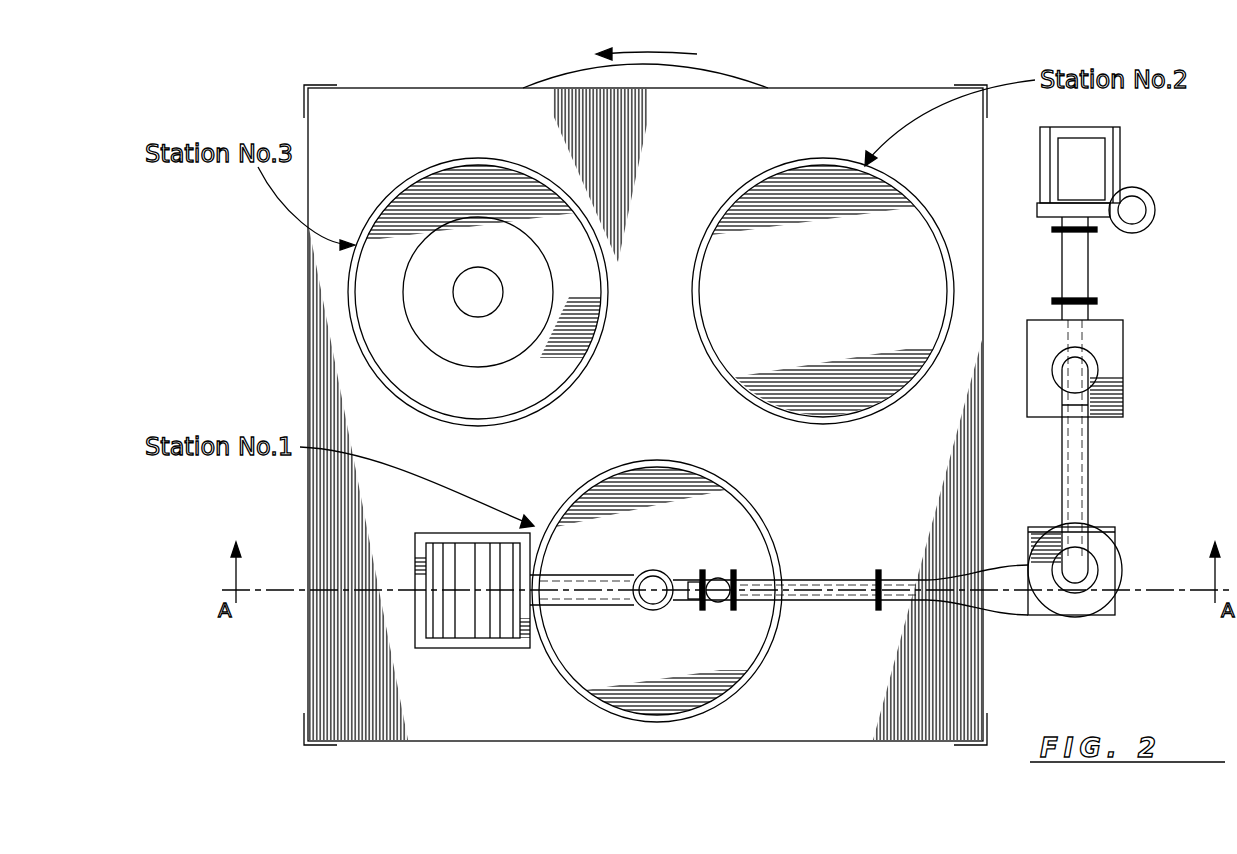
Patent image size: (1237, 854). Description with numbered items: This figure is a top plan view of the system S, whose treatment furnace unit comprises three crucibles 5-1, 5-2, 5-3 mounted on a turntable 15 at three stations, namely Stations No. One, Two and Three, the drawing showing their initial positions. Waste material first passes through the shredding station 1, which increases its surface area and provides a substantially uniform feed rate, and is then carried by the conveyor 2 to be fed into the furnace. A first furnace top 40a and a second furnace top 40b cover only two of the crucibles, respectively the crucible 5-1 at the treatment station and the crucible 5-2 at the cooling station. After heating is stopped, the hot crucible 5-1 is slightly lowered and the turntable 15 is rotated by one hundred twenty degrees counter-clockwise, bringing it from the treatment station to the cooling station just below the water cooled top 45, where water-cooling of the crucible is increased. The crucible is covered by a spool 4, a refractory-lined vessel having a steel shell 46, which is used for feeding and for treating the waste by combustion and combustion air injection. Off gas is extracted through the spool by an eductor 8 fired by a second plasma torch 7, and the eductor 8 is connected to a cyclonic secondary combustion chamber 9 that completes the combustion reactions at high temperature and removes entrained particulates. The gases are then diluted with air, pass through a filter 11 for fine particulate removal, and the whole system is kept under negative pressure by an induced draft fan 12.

The shredding station 1 is at (447, 648).
The conveyor 2 is at (590, 600).
The spool 4 is at (716, 520).
The crucible 5-1 is at (753, 628).
The crucible 5-2 is at (752, 212).
The crucible 5-3 is at (440, 192).
The second plasma torch 7 is at (722, 612).
The eductor 8 is at (795, 583).
The cyclonic secondary combustion chamber 9 is at (1097, 598).
The filter 11 is at (1110, 353).
The induced draft fan 12 is at (1088, 150).
The turntable 15 is at (707, 78).
The first furnace top 40a is at (653, 718).
The second furnace top 40b is at (730, 333).
The water cooled top 45 is at (908, 228).
The steel shell 46 is at (688, 466).
The system S is at (1186, 216).